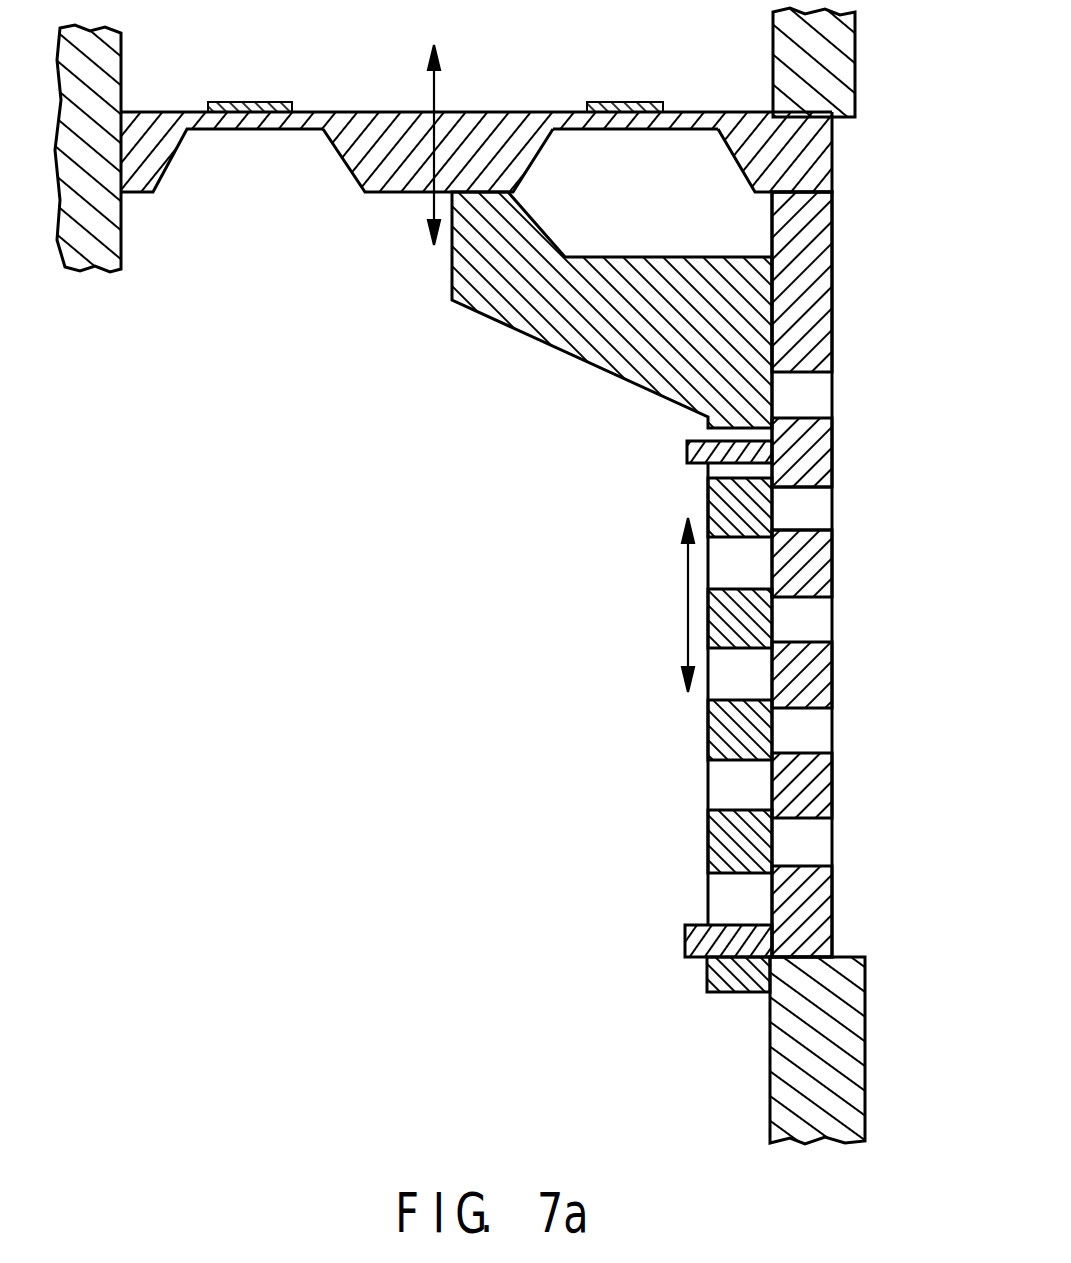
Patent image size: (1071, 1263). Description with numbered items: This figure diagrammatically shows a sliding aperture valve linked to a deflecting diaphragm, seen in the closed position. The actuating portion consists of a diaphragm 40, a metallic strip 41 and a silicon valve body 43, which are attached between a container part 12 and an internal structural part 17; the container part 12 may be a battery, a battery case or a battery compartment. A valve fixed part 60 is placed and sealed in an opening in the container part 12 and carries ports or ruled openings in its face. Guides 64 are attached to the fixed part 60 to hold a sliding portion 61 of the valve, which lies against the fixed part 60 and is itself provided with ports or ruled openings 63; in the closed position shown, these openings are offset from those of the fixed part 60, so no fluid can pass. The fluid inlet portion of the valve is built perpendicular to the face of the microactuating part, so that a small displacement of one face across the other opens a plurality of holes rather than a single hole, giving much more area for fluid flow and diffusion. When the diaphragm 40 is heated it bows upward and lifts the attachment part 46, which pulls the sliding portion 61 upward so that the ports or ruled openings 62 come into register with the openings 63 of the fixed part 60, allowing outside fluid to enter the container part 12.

The container part 12 is at (855, 65).
The internal structural part 17 is at (92, 262).
The diaphragm 40 is at (711, 112).
The metallic strip 41 is at (633, 102).
The silicon valve body 43 is at (833, 173).
The attachment part 46 is at (332, 178).
The valve fixed part 60 is at (833, 578).
The sliding portion 61 is at (598, 367).
The ports or ruled openings 62 is at (833, 508).
The ports or ruled openings 63 is at (703, 905).
The guides 64 is at (688, 455).